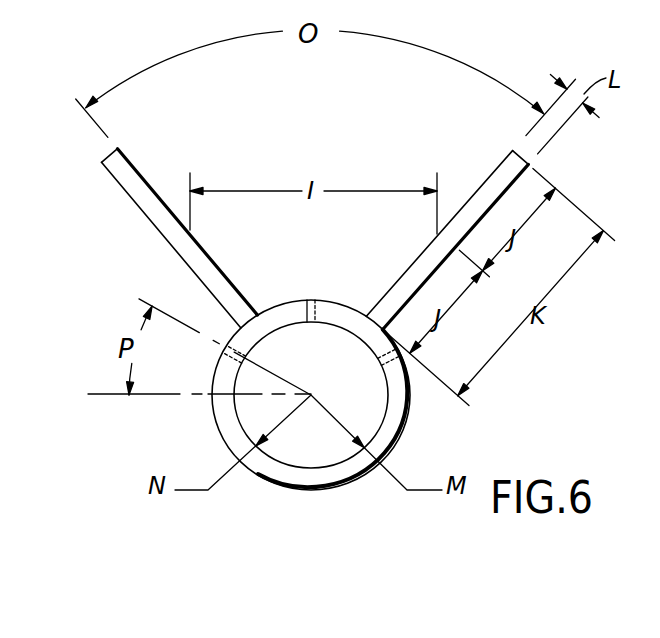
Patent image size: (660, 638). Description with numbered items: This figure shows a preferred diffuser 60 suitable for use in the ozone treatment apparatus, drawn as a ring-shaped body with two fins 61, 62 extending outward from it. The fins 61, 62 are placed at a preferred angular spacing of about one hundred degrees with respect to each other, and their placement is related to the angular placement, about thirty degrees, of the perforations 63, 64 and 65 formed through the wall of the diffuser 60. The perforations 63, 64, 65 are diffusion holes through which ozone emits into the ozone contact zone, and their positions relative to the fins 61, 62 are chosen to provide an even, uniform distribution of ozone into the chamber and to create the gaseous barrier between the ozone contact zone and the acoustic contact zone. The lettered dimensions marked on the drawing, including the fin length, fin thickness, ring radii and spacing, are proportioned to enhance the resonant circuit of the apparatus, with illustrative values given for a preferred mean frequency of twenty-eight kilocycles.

The diffuser 60 is at (217, 413).
The fin 61 is at (114, 177).
The fin 62 is at (518, 163).
The perforation 63 is at (226, 352).
The perforation 64 is at (315, 298).
The perforation 65 is at (392, 352).